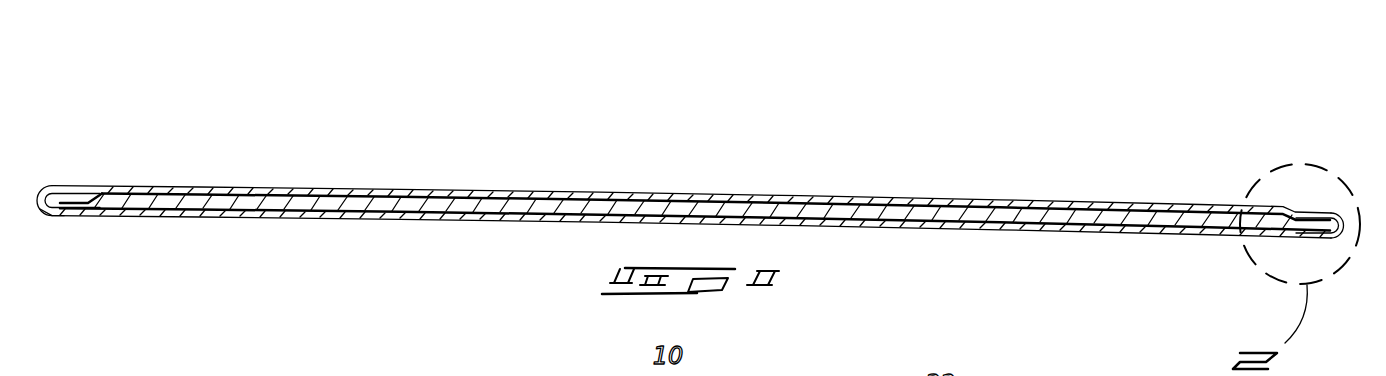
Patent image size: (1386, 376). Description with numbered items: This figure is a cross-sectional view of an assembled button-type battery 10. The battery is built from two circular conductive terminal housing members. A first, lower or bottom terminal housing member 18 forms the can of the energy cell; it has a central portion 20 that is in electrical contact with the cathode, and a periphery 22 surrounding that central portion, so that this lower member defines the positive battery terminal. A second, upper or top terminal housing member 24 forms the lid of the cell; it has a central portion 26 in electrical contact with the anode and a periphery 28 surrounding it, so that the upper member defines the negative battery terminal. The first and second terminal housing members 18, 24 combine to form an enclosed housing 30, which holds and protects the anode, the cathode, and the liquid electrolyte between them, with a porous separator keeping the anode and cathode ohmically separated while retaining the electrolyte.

The button-type battery 10 is at (1158, 143).
The first terminal housing member 18 is at (1097, 243).
The central portion 20 is at (522, 222).
The periphery 22 is at (71, 224).
The second terminal housing member 24 is at (514, 186).
The central portion 26 is at (644, 190).
The periphery 28 is at (98, 187).
The enclosed housing 30 is at (340, 160).